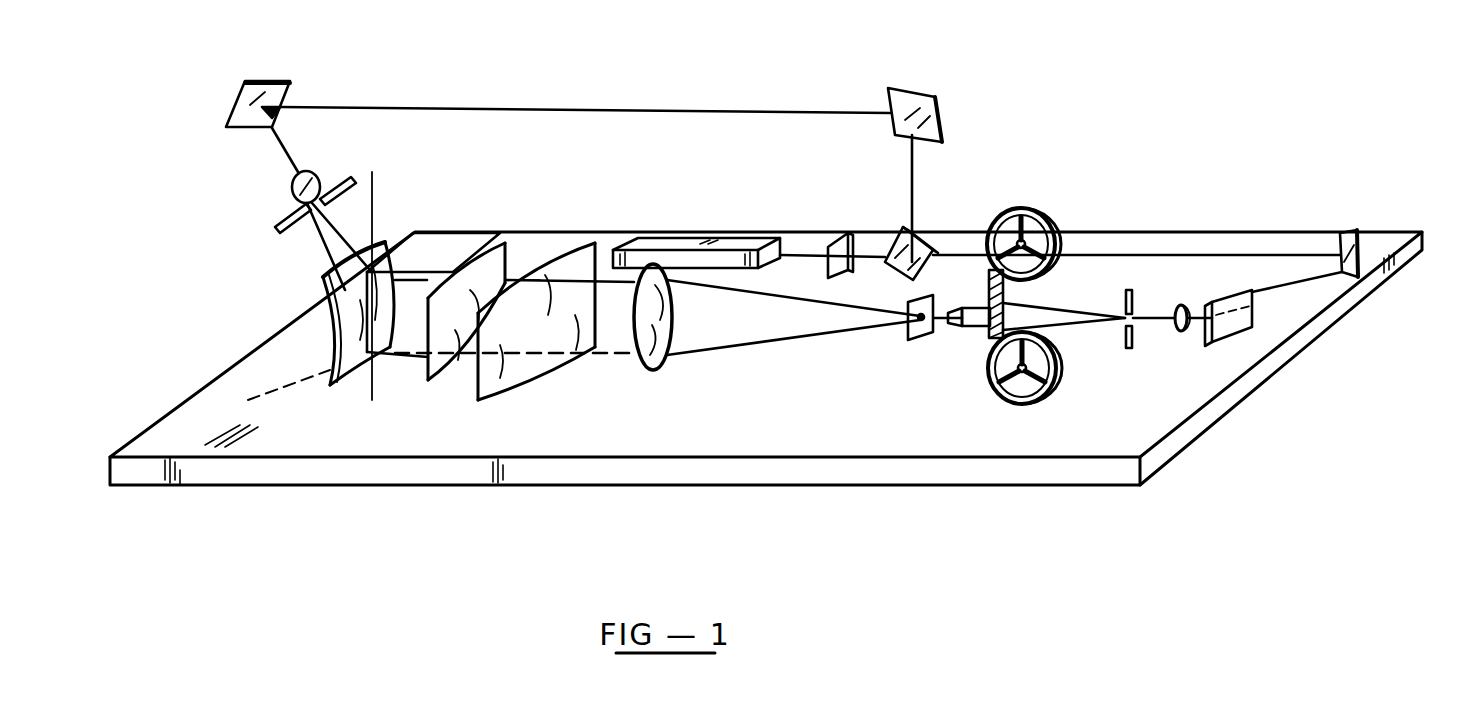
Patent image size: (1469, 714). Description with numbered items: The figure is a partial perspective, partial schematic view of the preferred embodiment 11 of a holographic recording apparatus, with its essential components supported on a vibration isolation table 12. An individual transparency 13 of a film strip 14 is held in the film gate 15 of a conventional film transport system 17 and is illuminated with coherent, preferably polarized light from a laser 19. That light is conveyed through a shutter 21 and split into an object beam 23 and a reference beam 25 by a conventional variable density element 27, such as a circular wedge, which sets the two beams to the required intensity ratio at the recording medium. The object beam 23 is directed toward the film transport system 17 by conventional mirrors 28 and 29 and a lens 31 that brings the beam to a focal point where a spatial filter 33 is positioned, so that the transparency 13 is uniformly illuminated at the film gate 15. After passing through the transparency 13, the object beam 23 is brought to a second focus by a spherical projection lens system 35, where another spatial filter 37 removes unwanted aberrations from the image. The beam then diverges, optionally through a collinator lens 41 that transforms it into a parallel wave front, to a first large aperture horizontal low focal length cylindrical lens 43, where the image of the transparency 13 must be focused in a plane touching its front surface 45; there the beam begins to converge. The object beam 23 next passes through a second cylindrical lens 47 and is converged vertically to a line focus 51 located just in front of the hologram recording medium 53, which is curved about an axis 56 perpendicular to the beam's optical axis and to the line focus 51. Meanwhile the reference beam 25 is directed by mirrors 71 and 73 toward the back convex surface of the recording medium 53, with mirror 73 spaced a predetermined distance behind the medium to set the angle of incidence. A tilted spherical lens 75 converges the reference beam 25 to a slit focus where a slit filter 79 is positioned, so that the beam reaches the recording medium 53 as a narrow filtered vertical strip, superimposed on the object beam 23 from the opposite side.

The preferred embodiment 11 is at (1214, 130).
The vibration isolation table 12 is at (963, 472).
The individual transparency 13 is at (1005, 312).
The film strip 14 is at (1052, 368).
The film gate 15 is at (988, 302).
The film transport system 17 is at (1023, 400).
The laser 19 is at (697, 245).
The shutter 21 is at (842, 242).
The object beam 23 is at (802, 320).
The reference beam 25 is at (530, 106).
The variable density element 27 is at (917, 273).
The mirror 28 is at (1358, 235).
The mirror 29 is at (1242, 330).
The lens 31 is at (1183, 330).
The spatial filter 33 is at (1130, 348).
The spherical projection lens system 35 is at (977, 324).
The spatial filter 37 is at (918, 332).
The collinator lens 41 is at (675, 373).
The first horizontal cylindrical lens 43 is at (552, 260).
The front surface 45 is at (495, 398).
The second cylindrical lens 47 is at (428, 330).
The line focus 51 is at (330, 385).
The hologram recording medium 53 is at (252, 393).
The axis 56 is at (498, 212).
The mirror 71 is at (935, 97).
The mirror 73 is at (289, 82).
The spherical lens 75 is at (166, 150).
The slit filter 79 is at (277, 226).